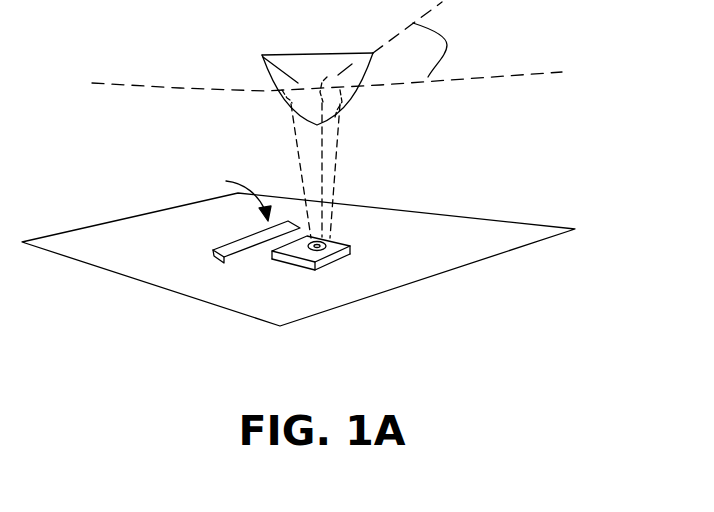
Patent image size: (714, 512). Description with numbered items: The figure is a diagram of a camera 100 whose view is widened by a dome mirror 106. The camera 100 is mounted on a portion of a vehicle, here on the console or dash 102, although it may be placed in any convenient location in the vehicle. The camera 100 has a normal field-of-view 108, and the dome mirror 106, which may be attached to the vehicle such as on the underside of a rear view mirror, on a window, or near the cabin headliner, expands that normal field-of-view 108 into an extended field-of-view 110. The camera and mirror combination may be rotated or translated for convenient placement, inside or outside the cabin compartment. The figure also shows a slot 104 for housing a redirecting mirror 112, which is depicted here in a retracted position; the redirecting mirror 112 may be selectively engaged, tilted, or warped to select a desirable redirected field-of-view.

The camera 100 is at (336, 262).
The console or dash 102 is at (377, 230).
The slot 104 is at (258, 238).
The dome mirror 106 is at (262, 55).
The normal field-of-view 108 is at (302, 153).
The extended field-of-view 110 is at (448, 50).
The redirecting mirror 112 is at (235, 198).